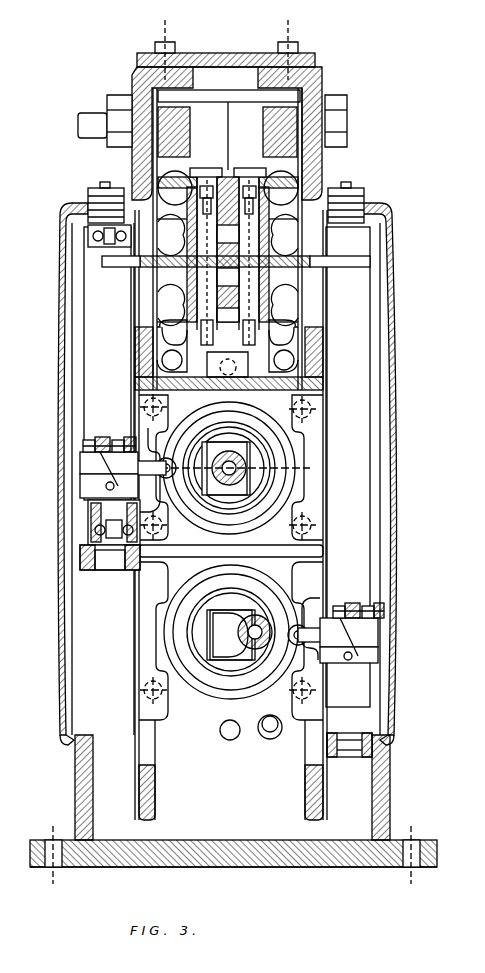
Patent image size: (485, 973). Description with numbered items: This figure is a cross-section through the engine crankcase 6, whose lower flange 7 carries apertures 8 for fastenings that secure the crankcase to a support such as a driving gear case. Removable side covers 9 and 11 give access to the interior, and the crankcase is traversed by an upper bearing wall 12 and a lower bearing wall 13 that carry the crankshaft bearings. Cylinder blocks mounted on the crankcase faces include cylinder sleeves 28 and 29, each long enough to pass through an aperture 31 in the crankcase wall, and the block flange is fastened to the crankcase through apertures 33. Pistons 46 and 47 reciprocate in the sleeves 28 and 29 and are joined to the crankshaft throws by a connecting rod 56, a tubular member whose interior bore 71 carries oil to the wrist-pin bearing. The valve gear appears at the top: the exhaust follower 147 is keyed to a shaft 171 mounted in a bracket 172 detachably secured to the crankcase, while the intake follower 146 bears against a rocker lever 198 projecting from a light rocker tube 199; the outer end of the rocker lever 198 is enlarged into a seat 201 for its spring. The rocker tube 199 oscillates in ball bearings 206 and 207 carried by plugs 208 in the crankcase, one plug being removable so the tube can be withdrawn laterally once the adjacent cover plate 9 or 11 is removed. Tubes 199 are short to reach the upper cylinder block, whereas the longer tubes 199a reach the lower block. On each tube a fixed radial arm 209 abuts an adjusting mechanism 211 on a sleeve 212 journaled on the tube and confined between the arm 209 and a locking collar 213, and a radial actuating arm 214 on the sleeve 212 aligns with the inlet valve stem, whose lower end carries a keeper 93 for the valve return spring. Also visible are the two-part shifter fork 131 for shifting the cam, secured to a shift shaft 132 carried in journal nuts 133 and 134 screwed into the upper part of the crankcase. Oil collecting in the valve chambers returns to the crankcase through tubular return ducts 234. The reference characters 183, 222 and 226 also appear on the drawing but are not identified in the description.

The crankcase 6 is at (390, 804).
The lower flange 7 is at (104, 858).
The apertures 8 is at (52, 868).
The removable side cover 9 is at (399, 540).
The removable side cover 11 is at (58, 568).
The upper bearing wall 12 is at (205, 385).
The lower bearing wall 13 is at (200, 846).
The cylinder sleeve 28 is at (200, 510).
The cylinder sleeve 29 is at (205, 685).
The aperture 31 is at (278, 515).
The apertures 33 is at (293, 407).
The piston 46 is at (262, 466).
The piston 47 is at (222, 675).
The connecting rod 56 is at (248, 480).
The interior bore 71 is at (262, 450).
The keeper 93 is at (148, 445).
The two-part shifter fork 131 is at (318, 92).
The shift shaft 132 is at (93, 113).
The journal nut 133 is at (348, 118).
The journal nut 134 is at (118, 146).
The intake follower 146 is at (140, 272).
The exhaust follower 147 is at (198, 170).
The shaft 171 is at (193, 232).
The bracket 172 is at (264, 238).
The spring seat 183 is at (175, 363).
The rocker lever 198 is at (102, 261).
The rocker tube 199 is at (83, 298).
The rocker tube 199a is at (374, 320).
The seat 201 is at (183, 286).
The ball bearing 206 is at (90, 234).
The ball bearing 207 is at (90, 532).
The plugs 208 is at (96, 188).
The fixed radial arm 209 is at (92, 444).
The adjusting mechanism 211 is at (85, 455).
The sleeve 212 is at (85, 470).
The locking collar 213 is at (90, 490).
The radial actuating arm 214 is at (100, 468).
The cover plate 222 is at (238, 52).
The cover bolt 226 is at (161, 42).
The tubular return ducts 234 is at (270, 740).